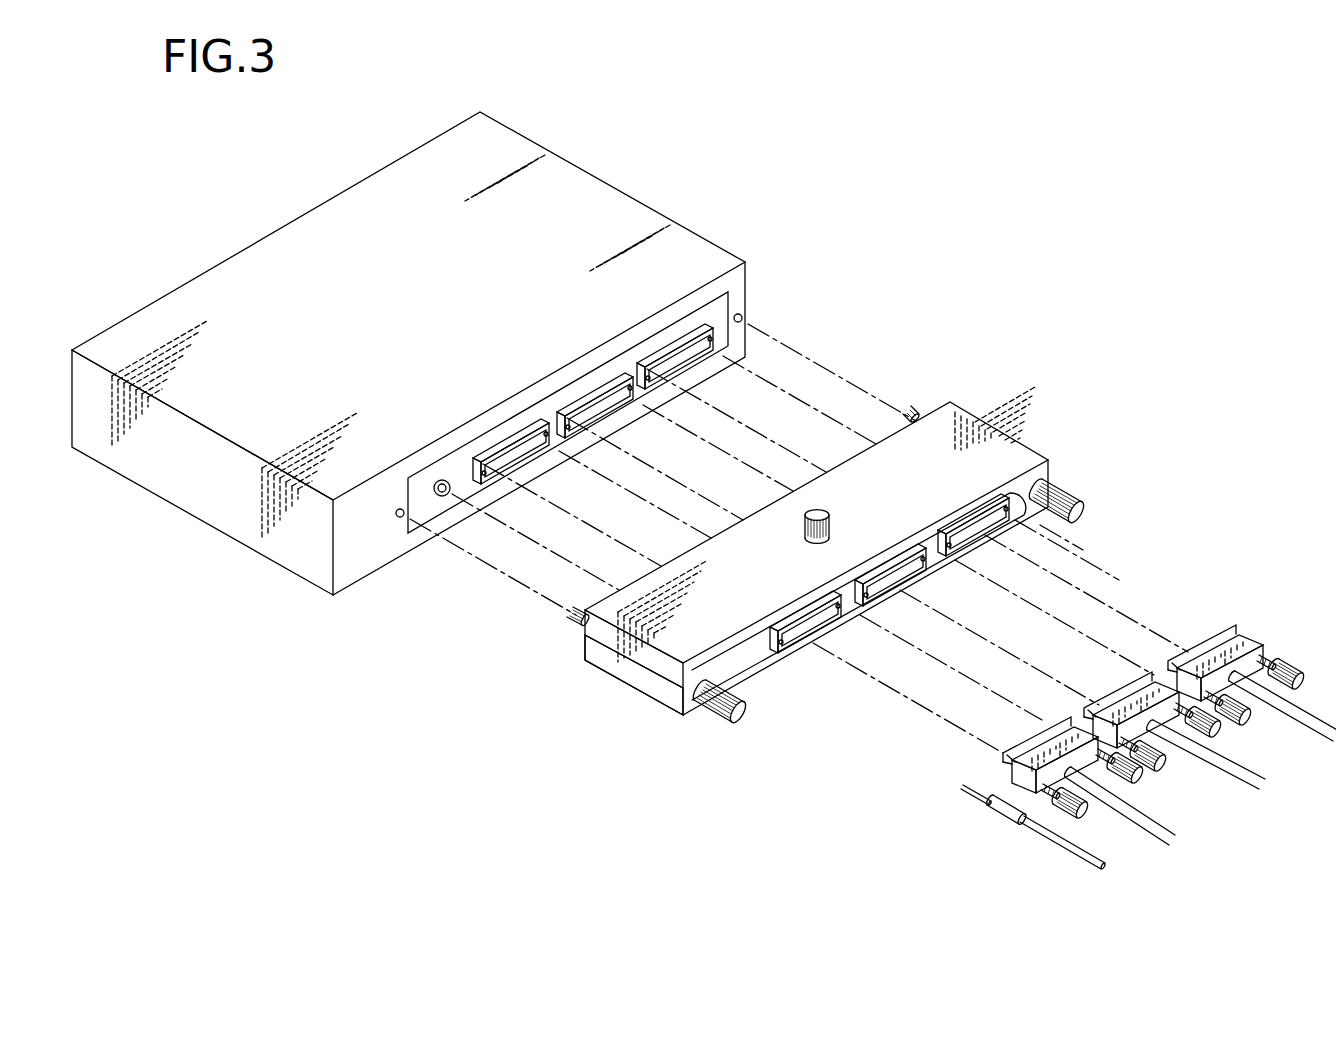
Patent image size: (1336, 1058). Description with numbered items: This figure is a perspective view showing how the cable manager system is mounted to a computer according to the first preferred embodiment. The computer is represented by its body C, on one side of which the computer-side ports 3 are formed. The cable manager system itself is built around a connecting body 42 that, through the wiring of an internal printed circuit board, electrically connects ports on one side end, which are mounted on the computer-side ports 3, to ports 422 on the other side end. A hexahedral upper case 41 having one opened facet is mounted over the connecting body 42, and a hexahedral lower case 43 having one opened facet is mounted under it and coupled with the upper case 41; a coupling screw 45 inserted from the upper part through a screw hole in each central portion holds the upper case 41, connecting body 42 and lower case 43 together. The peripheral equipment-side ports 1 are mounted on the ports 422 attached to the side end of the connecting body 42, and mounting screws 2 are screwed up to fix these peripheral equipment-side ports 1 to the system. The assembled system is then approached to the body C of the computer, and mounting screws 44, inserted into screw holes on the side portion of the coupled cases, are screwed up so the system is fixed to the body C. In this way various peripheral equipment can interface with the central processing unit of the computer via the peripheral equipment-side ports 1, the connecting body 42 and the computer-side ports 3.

The body of the computer C is at (598, 197).
The computer-side ports 3 is at (515, 455).
The upper case 41 is at (955, 418).
The connecting body 42 is at (762, 650).
The ports 422 is at (803, 648).
The lower case 43 is at (637, 683).
The mounting screws 44 is at (718, 713).
The coupling screw 45 is at (808, 516).
The peripheral equipment-side ports 1 is at (1172, 657).
The mounting screws 2 is at (1287, 690).